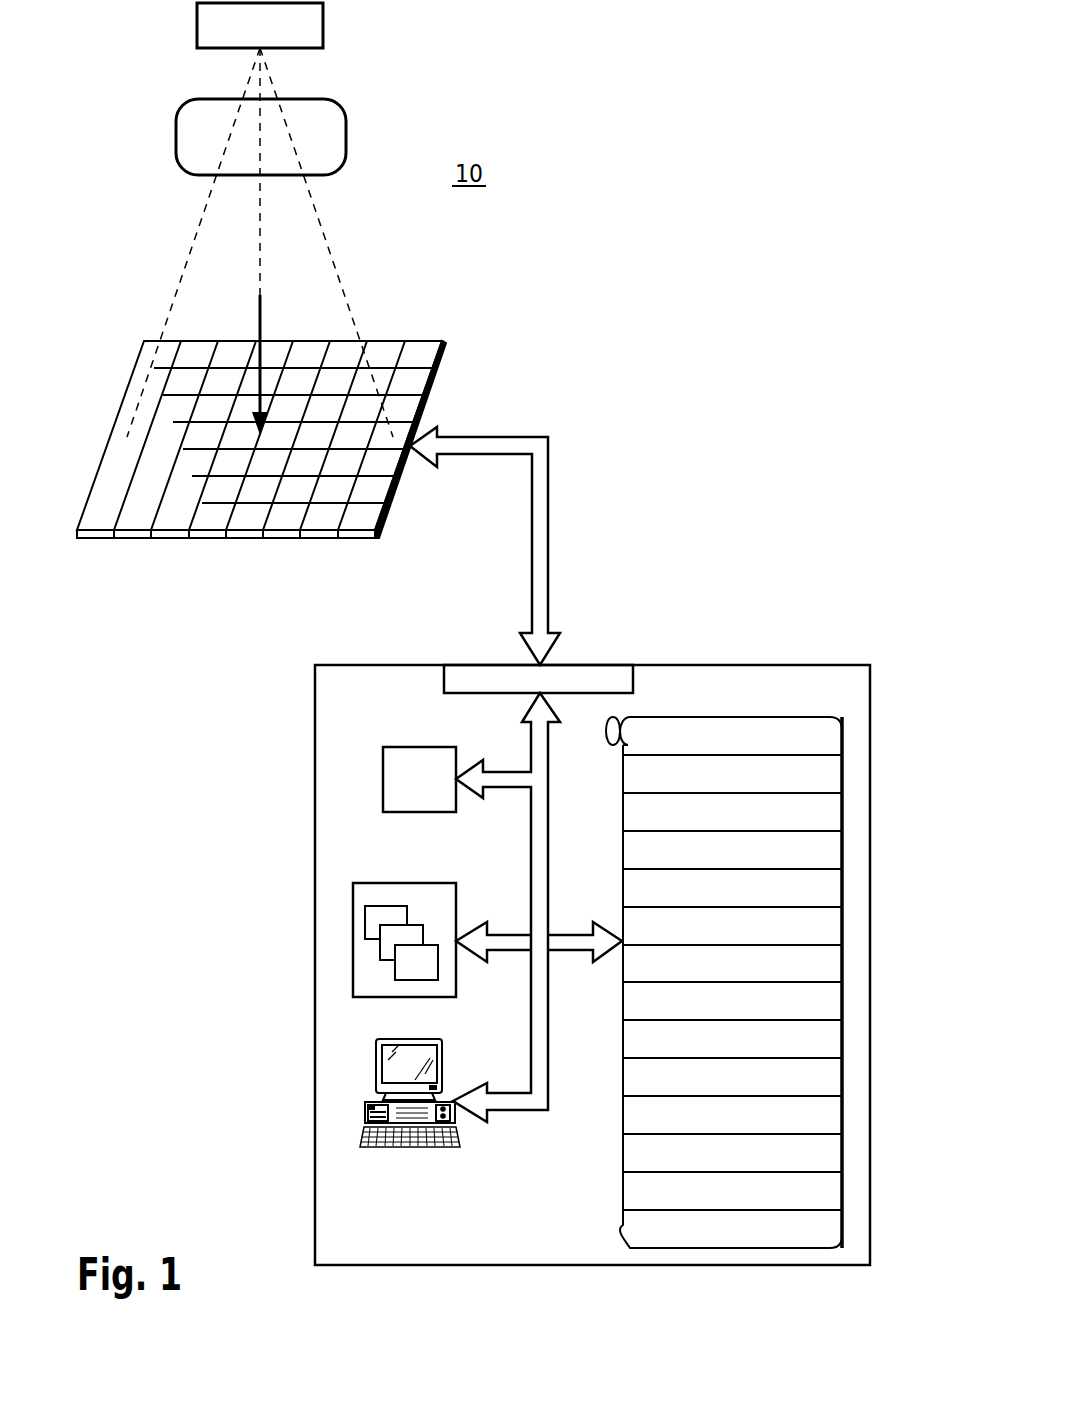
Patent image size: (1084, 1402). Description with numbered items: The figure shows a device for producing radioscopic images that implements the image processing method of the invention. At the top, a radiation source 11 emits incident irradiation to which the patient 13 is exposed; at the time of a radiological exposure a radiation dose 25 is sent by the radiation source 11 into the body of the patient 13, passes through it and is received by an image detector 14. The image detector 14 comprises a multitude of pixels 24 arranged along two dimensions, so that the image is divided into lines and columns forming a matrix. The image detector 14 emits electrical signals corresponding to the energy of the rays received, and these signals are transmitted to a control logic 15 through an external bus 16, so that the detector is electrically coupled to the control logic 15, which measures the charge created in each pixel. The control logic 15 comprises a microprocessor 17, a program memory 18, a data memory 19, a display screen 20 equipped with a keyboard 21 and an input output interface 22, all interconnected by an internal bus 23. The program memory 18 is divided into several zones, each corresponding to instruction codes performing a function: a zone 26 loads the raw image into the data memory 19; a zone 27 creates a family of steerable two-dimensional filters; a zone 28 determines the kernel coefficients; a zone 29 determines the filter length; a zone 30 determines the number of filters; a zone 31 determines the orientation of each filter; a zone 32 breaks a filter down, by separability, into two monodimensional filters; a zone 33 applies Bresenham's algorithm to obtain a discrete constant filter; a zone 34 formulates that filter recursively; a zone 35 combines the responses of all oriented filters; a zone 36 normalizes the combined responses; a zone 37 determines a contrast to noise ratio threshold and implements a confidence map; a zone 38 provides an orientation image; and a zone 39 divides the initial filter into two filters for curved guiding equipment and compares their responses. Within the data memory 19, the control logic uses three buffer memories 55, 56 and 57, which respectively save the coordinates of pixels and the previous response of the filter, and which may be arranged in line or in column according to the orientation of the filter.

The radiation source 11 is at (323, 18).
The patient 13 is at (333, 137).
The image detector 14 is at (433, 383).
The control logic 15 is at (495, 1266).
The external bus 16 is at (540, 525).
The microprocessor 17 is at (419, 747).
The program memory 18 is at (773, 717).
The data memory 19 is at (369, 883).
The display screen 20 is at (376, 1053).
The keyboard 21 is at (360, 1130).
The input output interface 22 is at (597, 672).
The internal bus 23 is at (531, 848).
The pixels 24 is at (178, 512).
The radiation dose 25 is at (260, 250).
The zone 26 is at (828, 732).
The zone 27 is at (828, 771).
The zone 28 is at (828, 809).
The zone 29 is at (828, 847).
The zone 30 is at (828, 885).
The zone 31 is at (828, 923).
The zone 32 is at (828, 961).
The zone 33 is at (828, 999).
The zone 34 is at (828, 1037).
The zone 35 is at (828, 1075).
The zone 36 is at (828, 1113).
The zone 37 is at (840, 1150).
The zone 38 is at (840, 1188).
The zone 39 is at (828, 1229).
The buffer memory 55 is at (365, 912).
The buffer memory 56 is at (380, 950).
The buffer memory 57 is at (395, 970).